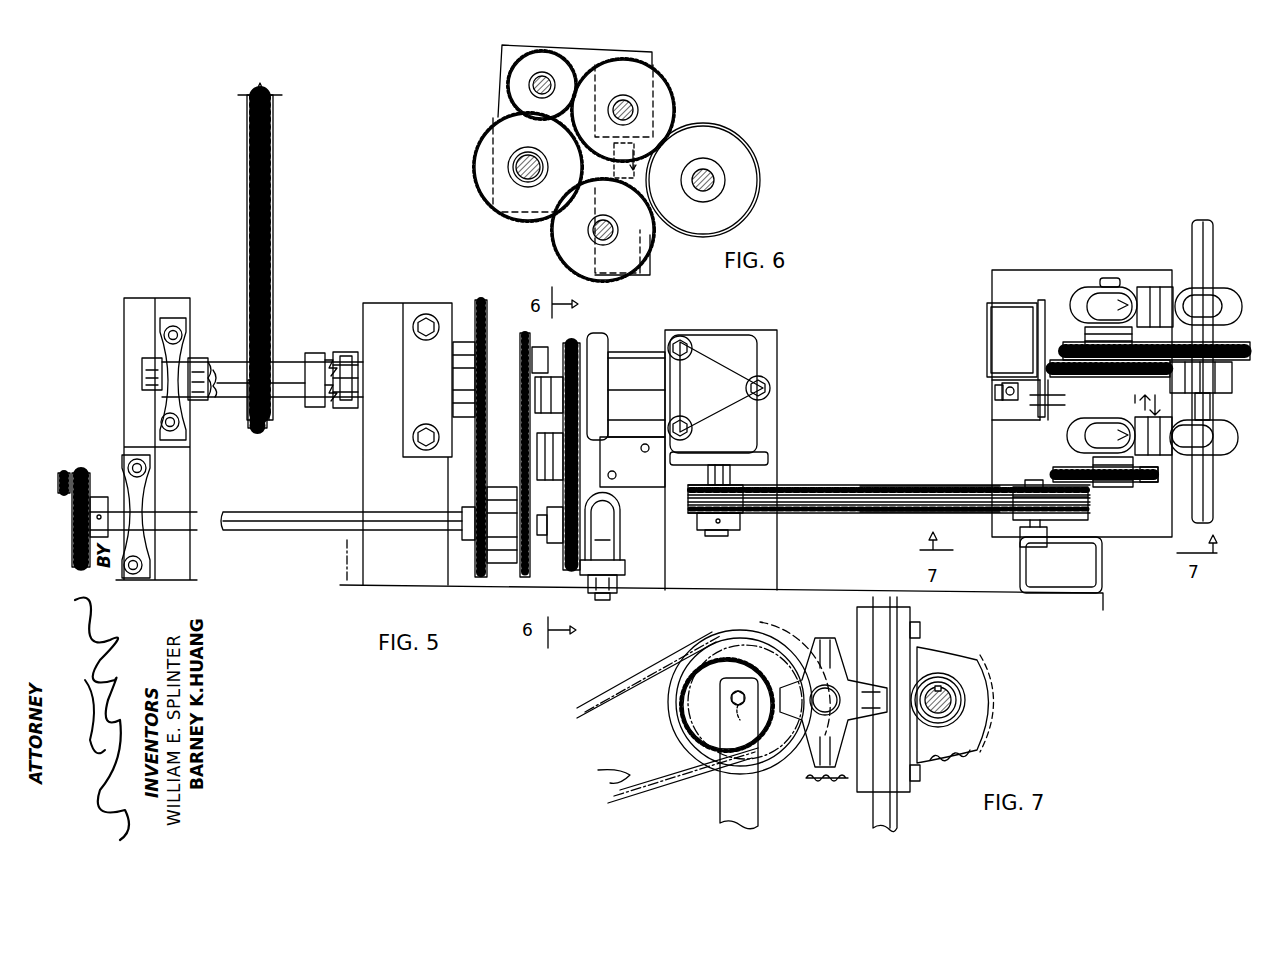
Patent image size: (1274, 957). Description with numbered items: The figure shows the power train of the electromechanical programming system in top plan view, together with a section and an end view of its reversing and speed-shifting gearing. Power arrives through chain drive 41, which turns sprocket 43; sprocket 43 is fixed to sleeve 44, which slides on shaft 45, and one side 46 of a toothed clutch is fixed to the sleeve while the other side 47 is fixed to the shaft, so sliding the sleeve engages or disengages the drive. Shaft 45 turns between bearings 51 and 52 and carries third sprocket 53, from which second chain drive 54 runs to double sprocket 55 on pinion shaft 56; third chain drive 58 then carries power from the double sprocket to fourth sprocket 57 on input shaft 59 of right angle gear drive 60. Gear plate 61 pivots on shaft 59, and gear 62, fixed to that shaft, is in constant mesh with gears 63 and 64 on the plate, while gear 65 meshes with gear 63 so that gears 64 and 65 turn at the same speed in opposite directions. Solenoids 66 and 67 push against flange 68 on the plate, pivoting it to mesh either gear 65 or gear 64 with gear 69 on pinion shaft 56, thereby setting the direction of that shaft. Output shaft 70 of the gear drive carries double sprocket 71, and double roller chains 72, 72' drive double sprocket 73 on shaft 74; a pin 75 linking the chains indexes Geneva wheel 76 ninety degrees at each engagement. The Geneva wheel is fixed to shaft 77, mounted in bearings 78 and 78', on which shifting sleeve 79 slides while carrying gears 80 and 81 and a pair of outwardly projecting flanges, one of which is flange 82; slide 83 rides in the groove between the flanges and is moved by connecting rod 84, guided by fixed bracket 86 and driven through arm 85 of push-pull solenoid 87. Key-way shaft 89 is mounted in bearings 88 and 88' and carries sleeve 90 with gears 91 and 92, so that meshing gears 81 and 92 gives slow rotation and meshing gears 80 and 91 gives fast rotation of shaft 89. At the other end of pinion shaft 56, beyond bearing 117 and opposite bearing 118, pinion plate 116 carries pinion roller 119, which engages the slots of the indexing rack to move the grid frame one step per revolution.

In FIG. 5, the chain drive 41 is at (262, 236).
In FIG. 5, the sprocket 43 is at (252, 428).
In FIG. 5, the sleeve 44 is at (200, 360).
In FIG. 5, the shaft 45 is at (142, 360).
In FIG. 5, the clutch side 46 is at (312, 353).
In FIG. 5, the clutch side 47 is at (347, 410).
In FIG. 5, the bearing 51 is at (178, 298).
In FIG. 5, the bearing 52 is at (420, 304).
In FIG. 5, the third sprocket 53 is at (487, 312).
In FIG. 5, the second chain drive 54 is at (472, 455).
In FIG. 5, the double sprocket 55 is at (505, 565).
In FIG. 5, the pinion shaft 56 is at (262, 532).
In FIG. 5, the fourth sprocket 57 is at (532, 340).
In FIG. 5, the third chain drive 58 is at (537, 438).
In FIG. 5, the input shaft 59 is at (534, 384).
In FIG. 5, the right angle gear drive 60 is at (748, 356).
In FIG. 5, the gear plate 61 is at (598, 340).
In FIG. 6, the gear plate 61 is at (502, 98).
In FIG. 6, the gear 62 is at (480, 135).
In FIG. 6, the gear 63 is at (548, 66).
In FIG. 6, the gear 64 is at (556, 262).
In FIG. 6, the gear 65 is at (668, 92).
In FIG. 6, the solenoid 66 is at (648, 57).
In FIG. 6, the solenoid 67 is at (652, 273).
In FIG. 6, the flange 68 is at (614, 170).
In FIG. 6, the gear 69 is at (735, 152).
In FIG. 5, the output shaft 70 is at (775, 478).
In FIG. 5, the double sprocket 71 is at (688, 500).
In FIG. 5, the roller chain 72 is at (889, 529).
In FIG. 7, the roller chain 72 is at (667, 717).
In FIG. 5, the roller chain 72' is at (930, 521).
In FIG. 5, the double sprocket 73 is at (1003, 522).
In FIG. 7, the double sprocket 73 is at (683, 715).
In FIG. 5, the shaft 74 is at (1030, 482).
In FIG. 7, the shaft 74 is at (740, 710).
In FIG. 5, the pin 75 is at (1085, 485).
In FIG. 7, the pin 75 is at (790, 660).
In FIG. 5, the Geneva wheel 76 is at (1148, 483).
In FIG. 7, the Geneva wheel 76 is at (815, 772).
In FIG. 5, the shaft 77 is at (1108, 282).
In FIG. 5, the bearing 78 is at (1095, 443).
In FIG. 7, the bearing 78 is at (740, 688).
In FIG. 5, the bearing 78' is at (1121, 280).
In FIG. 5, the shifting sleeve 79 is at (1130, 388).
In FIG. 5, the gear 80 is at (1046, 320).
In FIG. 7, the gear 80 is at (800, 640).
In FIG. 5, the gear 81 is at (1085, 338).
In FIG. 5, the flange 82 is at (1109, 372).
In FIG. 5, the slide 83 is at (1020, 398).
In FIG. 5, the connecting rod 84 is at (1000, 392).
In FIG. 5, the arm 85 is at (995, 380).
In FIG. 5, the fixed bracket 86 is at (1040, 300).
In FIG. 5, the push-pull solenoid 87 is at (1005, 330).
In FIG. 5, the bearing 88 is at (1204, 462).
In FIG. 7, the bearing 88 is at (969, 705).
In FIG. 5, the bearing 88' is at (1210, 291).
In FIG. 5, the key-way shaft 89 is at (1195, 224).
In FIG. 7, the key-way shaft 89 is at (950, 700).
In FIG. 5, the sleeve 90 is at (1212, 402).
In FIG. 5, the gear 91 is at (1232, 375).
In FIG. 5, the gear 92 is at (1250, 352).
In FIG. 7, the gear 92 is at (988, 730).
In FIG. 5, the pinion plate 116 is at (86, 474).
In FIG. 5, the bearing 117 is at (136, 503).
In FIG. 5, the bearing 118 is at (612, 525).
In FIG. 5, the pinion roller 119 is at (63, 473).